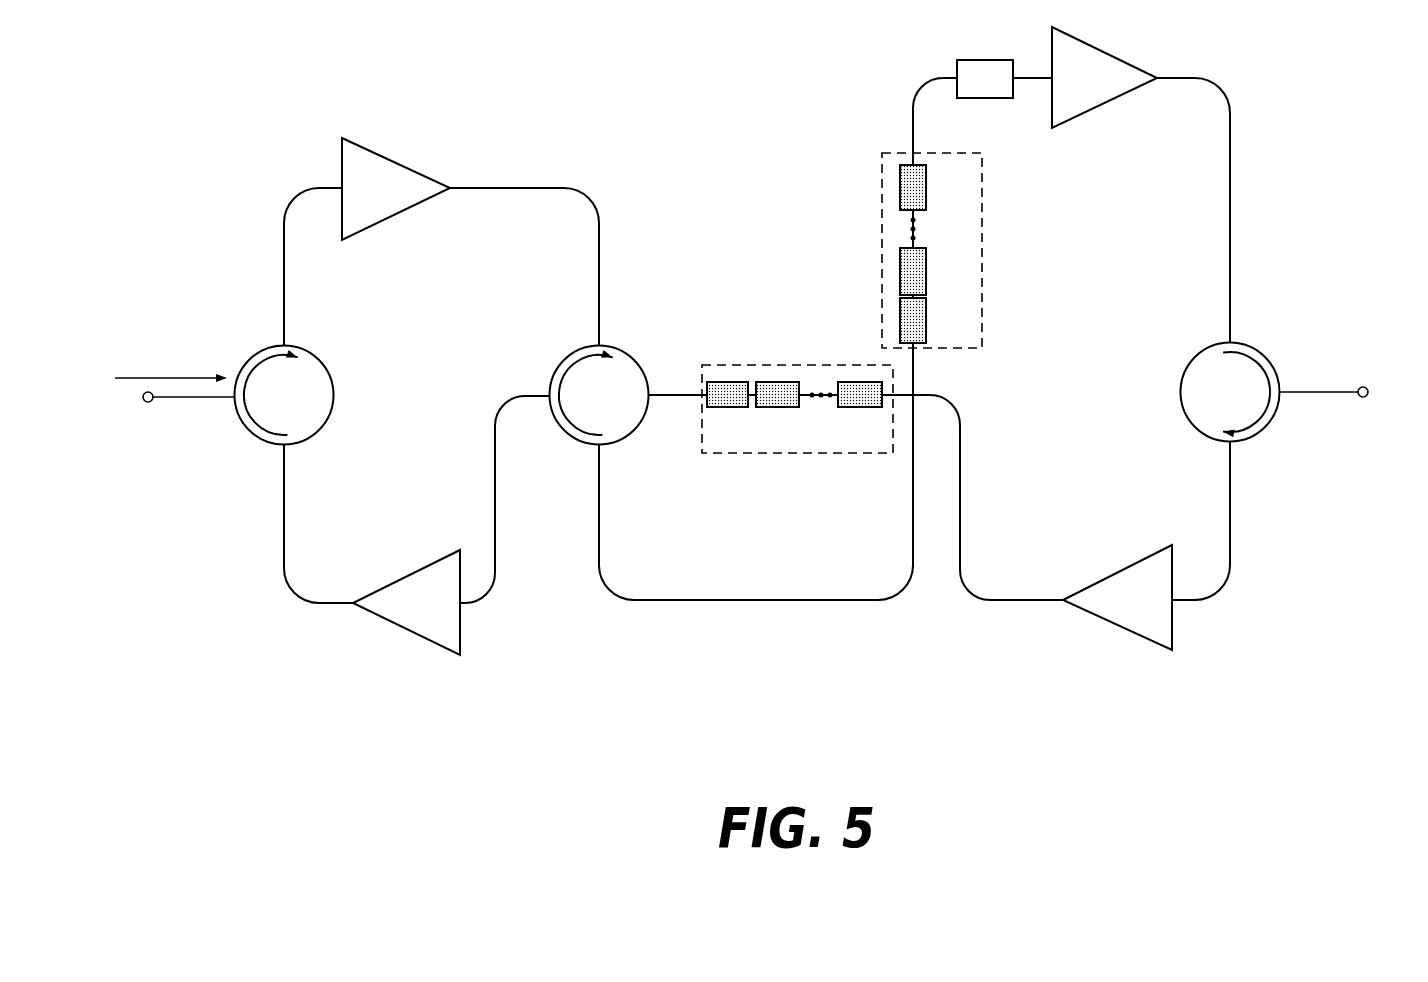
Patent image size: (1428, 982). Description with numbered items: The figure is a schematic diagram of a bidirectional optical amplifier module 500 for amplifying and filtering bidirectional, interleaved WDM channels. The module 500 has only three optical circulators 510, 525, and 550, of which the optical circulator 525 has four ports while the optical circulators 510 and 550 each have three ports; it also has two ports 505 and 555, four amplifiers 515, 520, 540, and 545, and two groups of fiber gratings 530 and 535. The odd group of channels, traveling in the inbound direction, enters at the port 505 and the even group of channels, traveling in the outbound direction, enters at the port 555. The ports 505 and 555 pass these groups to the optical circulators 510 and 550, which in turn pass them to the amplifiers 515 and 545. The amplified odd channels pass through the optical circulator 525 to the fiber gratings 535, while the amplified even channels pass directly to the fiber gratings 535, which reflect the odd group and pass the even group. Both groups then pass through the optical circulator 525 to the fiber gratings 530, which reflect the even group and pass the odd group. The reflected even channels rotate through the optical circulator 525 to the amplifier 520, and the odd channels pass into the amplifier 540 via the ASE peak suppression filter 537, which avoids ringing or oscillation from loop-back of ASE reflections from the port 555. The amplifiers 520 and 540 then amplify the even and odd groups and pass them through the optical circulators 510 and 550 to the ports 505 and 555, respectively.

The bidirectional optical amplifier module 500 is at (650, 132).
The port 505 is at (148, 416).
The optical circulator 510 is at (266, 459).
The amplifier 515 is at (396, 201).
The amplifier 520 is at (441, 616).
The optical circulator 525 is at (538, 372).
The fiber gratings 530 is at (868, 237).
The fiber gratings 535 is at (781, 467).
The ASE peak suppression filter 537 is at (975, 60).
The amplifier 540 is at (1114, 93).
The amplifier 545 is at (1154, 614).
The optical circulator 550 is at (1254, 455).
The port 555 is at (1363, 414).